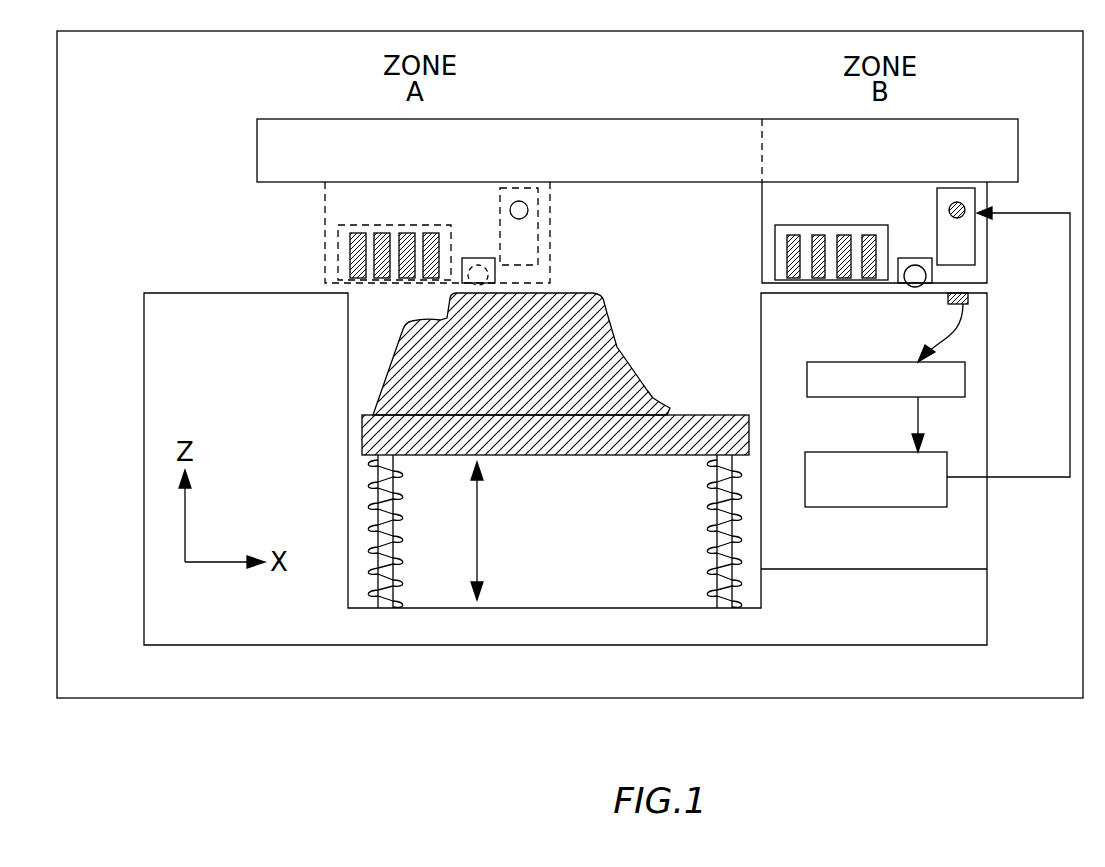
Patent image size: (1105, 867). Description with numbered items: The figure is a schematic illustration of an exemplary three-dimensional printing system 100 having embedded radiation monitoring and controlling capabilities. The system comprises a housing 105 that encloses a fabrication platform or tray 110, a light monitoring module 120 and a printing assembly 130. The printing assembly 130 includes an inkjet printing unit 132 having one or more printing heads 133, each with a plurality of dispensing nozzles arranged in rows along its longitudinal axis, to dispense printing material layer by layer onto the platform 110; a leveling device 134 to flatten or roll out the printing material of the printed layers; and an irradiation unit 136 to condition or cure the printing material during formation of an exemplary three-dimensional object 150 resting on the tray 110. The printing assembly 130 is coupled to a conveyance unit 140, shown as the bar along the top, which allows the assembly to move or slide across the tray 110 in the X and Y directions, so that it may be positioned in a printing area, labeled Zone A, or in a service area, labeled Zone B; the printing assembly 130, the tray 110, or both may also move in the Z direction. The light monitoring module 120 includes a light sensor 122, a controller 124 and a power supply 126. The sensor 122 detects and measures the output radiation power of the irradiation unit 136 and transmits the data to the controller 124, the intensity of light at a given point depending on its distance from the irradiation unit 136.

The three-dimensional printing system 100 is at (924, 726).
The housing 105 is at (137, 31).
The fabrication platform or tray 110 is at (627, 440).
The light monitoring module 120 is at (855, 572).
The light sensor 122 is at (945, 300).
The controller 124 is at (865, 362).
The power supply 126 is at (865, 452).
The printing assembly 130 is at (552, 202).
The inkjet printing unit 132 is at (340, 247).
The printing heads 133 is at (431, 233).
The leveling device 134 is at (478, 285).
The irradiation unit 136 is at (523, 247).
The conveyance unit 140 is at (642, 118).
The three-dimensional object 150 is at (617, 358).